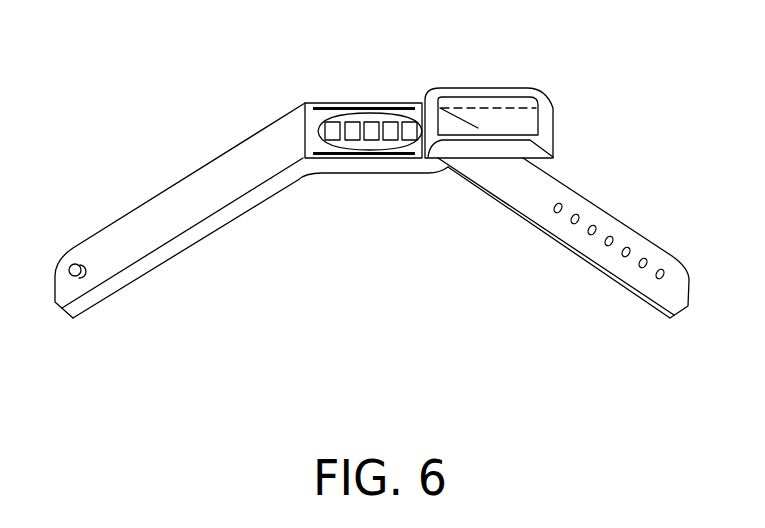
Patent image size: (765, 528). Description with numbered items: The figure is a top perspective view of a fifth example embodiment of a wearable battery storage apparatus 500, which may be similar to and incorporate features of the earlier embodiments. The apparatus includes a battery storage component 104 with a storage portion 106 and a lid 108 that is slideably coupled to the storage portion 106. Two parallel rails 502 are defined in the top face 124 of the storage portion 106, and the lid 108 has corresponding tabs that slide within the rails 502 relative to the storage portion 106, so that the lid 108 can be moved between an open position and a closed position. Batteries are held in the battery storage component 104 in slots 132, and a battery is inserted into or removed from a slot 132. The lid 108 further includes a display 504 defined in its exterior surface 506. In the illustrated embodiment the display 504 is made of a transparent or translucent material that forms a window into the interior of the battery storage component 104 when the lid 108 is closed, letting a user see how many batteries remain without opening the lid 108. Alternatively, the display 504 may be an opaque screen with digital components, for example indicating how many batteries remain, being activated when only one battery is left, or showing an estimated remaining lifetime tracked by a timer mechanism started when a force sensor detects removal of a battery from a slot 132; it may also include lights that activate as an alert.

The wearable battery storage apparatus 500 is at (170, 134).
The battery storage component 104 is at (374, 238).
The storage portion 106 is at (318, 167).
The lid 108 is at (550, 122).
The top face 124 is at (313, 128).
The slot 132 is at (396, 121).
The rails 502 is at (327, 107).
The display 504 is at (519, 93).
The exterior surface 506 is at (440, 160).